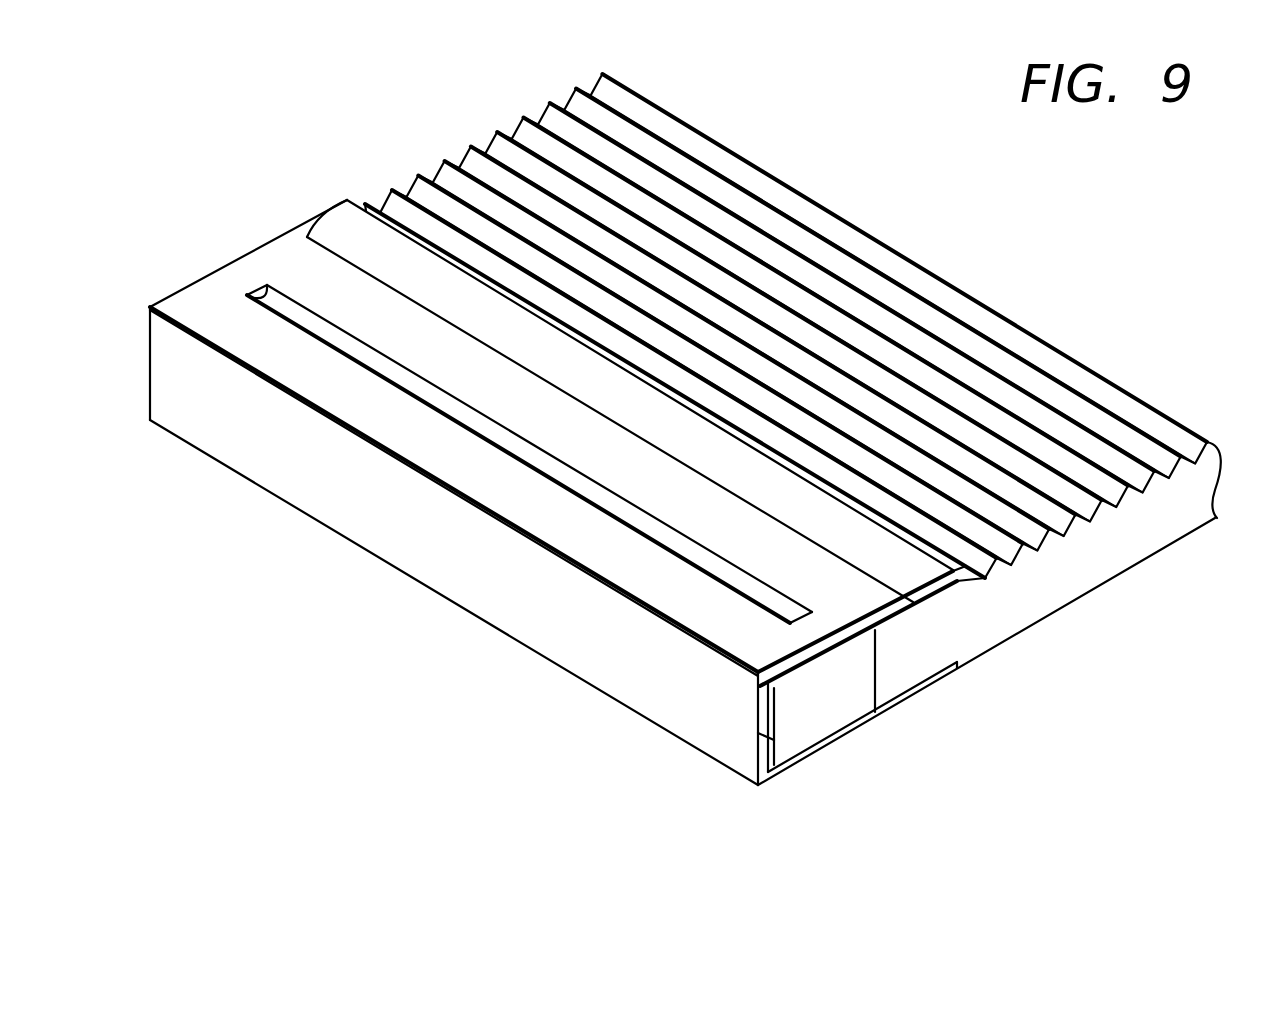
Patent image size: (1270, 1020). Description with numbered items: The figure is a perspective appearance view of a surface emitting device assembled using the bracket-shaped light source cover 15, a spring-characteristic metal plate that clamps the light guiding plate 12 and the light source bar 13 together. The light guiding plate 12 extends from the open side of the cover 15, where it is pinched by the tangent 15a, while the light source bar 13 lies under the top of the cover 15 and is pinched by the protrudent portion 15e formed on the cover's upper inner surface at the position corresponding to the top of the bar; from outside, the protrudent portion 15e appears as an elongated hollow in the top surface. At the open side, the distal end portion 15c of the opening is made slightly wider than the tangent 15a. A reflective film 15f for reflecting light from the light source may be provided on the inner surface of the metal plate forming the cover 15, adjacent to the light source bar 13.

The light guiding plate 12 is at (1102, 556).
The light source bar 13 is at (820, 722).
The light source cover 15 is at (228, 281).
The tangent portion 15a is at (910, 604).
The distal end portion 15c is at (965, 565).
The protrudent portion 15e is at (357, 360).
The reflective film 15f is at (770, 740).